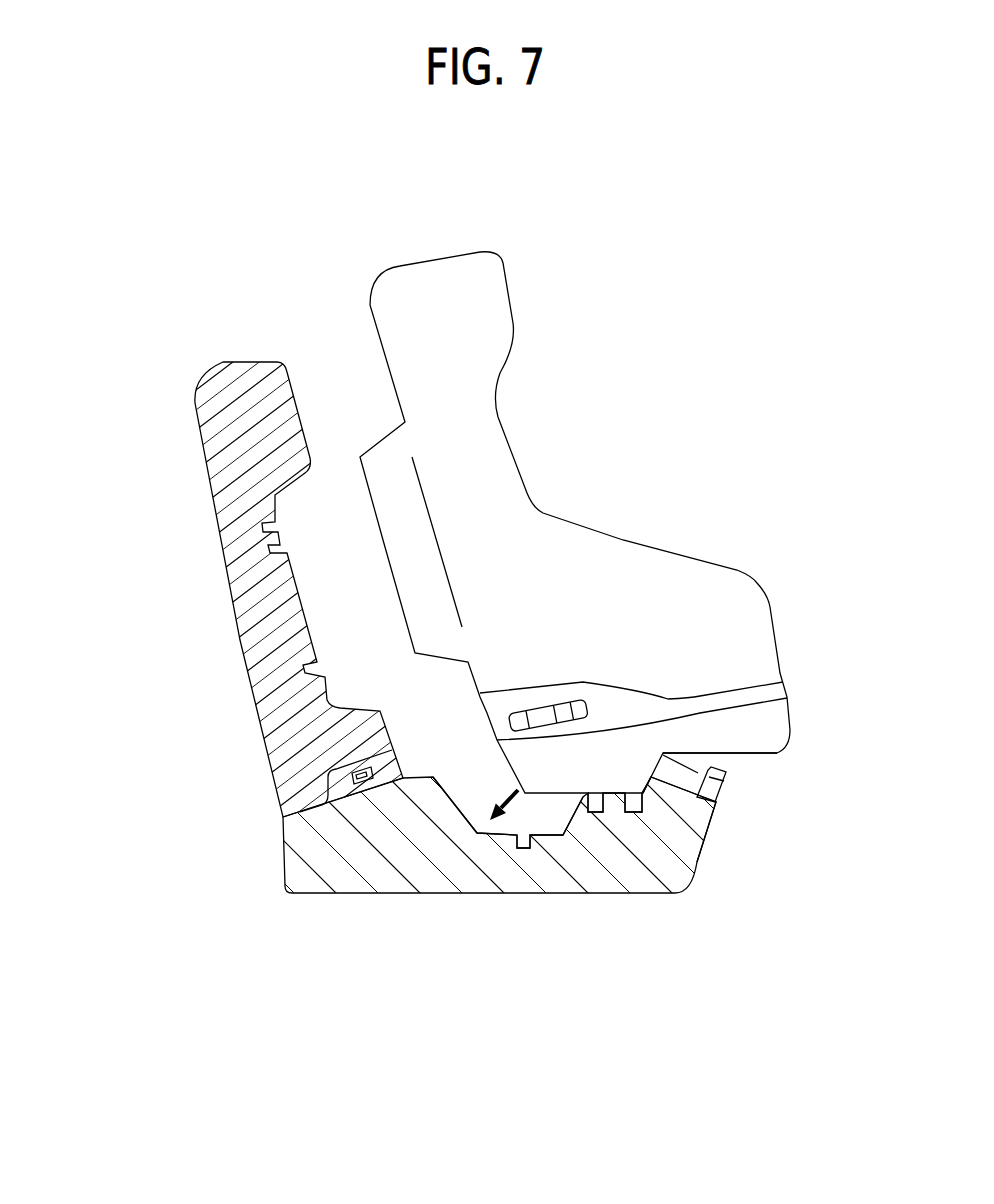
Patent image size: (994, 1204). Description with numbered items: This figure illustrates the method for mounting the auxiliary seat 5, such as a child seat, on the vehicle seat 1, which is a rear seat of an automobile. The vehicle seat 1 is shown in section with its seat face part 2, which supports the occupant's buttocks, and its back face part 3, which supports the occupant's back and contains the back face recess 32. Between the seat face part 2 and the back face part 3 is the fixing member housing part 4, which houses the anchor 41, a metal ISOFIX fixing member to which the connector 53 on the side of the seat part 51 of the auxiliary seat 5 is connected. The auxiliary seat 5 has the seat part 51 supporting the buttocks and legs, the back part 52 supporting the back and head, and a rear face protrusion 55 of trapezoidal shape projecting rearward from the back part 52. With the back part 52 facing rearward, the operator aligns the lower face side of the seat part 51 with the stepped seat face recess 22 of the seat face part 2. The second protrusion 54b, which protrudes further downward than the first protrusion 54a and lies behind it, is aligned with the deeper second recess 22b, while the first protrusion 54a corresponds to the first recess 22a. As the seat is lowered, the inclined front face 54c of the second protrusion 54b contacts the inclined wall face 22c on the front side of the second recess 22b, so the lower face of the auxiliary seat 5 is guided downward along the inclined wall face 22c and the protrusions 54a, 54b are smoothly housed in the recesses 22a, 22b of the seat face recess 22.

The vehicle seat 1 is at (106, 265).
The seat face part 2 is at (700, 859).
The back face part 3 is at (210, 457).
The back face recess 32 is at (265, 620).
The fixing member housing part 4 is at (404, 733).
The anchor 41 is at (349, 790).
The auxiliary seat 5 is at (616, 197).
The seat part 51 is at (796, 634).
The back part 52 is at (529, 423).
The connector 53 is at (536, 712).
The first protrusion 54a is at (770, 755).
The second protrusion 54b is at (716, 802).
The inclined front face 54c is at (727, 777).
The rear face protrusion 55 is at (374, 412).
The seat face recess 22 is at (662, 968).
The first recess 22a is at (647, 800).
The second recess 22b is at (537, 847).
The inclined wall face 22c is at (588, 822).